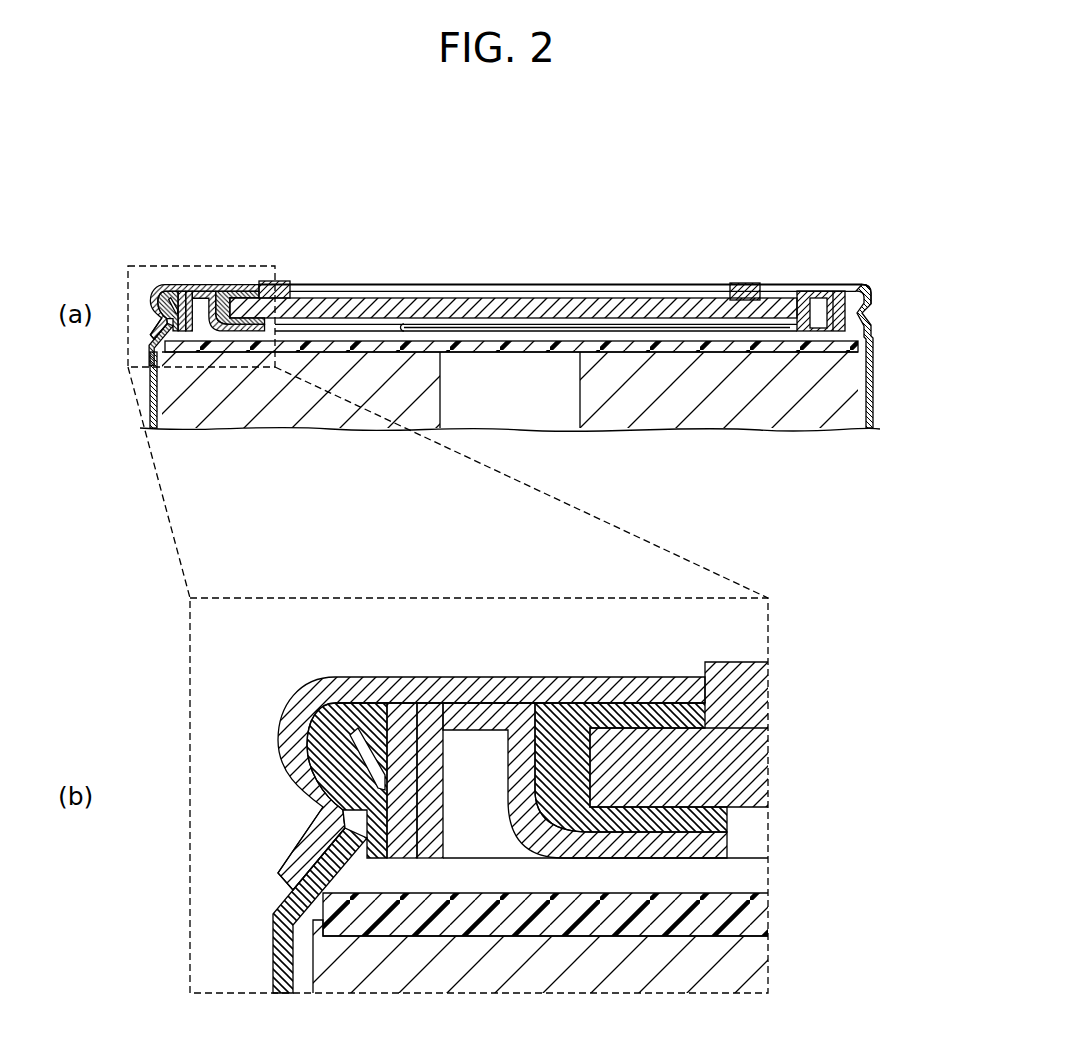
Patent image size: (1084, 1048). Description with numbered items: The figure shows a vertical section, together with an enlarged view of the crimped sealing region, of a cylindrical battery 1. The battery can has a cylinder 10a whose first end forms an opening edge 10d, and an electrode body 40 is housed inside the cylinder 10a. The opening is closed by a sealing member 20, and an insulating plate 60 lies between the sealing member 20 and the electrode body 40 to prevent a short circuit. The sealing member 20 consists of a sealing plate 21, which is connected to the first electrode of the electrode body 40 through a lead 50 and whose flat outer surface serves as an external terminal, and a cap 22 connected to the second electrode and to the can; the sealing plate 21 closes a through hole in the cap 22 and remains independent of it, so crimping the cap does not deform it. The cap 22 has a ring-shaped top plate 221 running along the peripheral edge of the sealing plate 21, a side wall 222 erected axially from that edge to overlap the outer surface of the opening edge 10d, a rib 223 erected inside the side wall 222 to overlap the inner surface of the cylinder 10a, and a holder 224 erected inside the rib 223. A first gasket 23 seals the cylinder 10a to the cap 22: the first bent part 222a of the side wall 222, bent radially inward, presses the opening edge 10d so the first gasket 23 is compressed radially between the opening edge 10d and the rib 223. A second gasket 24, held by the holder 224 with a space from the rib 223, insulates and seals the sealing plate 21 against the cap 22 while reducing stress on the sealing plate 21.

The cylindrical battery 1 is at (620, 221).
The sealing member 20 is at (810, 269).
The sealing plate 21 is at (455, 308).
The cap 22 is at (288, 186).
The top plate 221 is at (232, 298).
The side wall 222 is at (151, 311).
The first bent part 222a is at (278, 872).
The rib 223 is at (200, 300).
The holder 224 is at (210, 300).
The first gasket 23 is at (870, 305).
The second gasket 24 is at (744, 284).
The electrode body 40 is at (753, 423).
The lead 50 is at (655, 333).
The insulating plate 60 is at (815, 350).
The cylinder 10a is at (876, 410).
The opening edge 10d is at (864, 286).